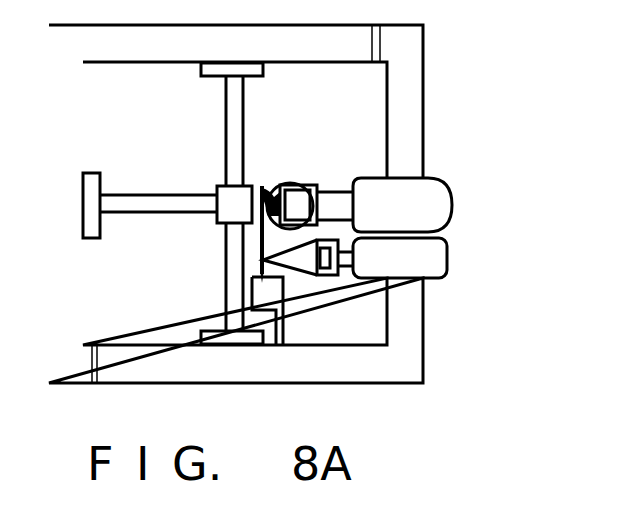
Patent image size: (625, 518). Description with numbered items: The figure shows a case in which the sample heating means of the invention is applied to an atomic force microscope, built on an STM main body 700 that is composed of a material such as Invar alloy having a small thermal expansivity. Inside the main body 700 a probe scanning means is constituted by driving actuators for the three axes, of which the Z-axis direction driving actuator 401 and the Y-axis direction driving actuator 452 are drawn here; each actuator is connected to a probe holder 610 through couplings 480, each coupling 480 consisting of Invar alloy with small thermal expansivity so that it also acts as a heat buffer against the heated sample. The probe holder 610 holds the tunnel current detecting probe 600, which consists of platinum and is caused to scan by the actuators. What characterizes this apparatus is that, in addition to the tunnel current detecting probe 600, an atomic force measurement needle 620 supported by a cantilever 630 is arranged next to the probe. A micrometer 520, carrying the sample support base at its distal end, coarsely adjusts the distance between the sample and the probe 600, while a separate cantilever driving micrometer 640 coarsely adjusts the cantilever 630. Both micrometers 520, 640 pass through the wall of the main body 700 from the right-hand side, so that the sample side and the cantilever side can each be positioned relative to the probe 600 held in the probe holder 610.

The Z-axis direction driving actuator 401 is at (104, 174).
The Y-axis direction driving actuator 452 is at (208, 77).
The coupling 480 is at (226, 157).
The micrometer 520 is at (450, 180).
The tunnel current detecting probe 600 is at (260, 188).
The probe holder 610 is at (217, 225).
The atomic force measurement needle 620 is at (272, 190).
The cantilever 630 is at (266, 236).
The cantilever driving micrometer 640 is at (447, 258).
The STM main body 700 is at (270, 385).